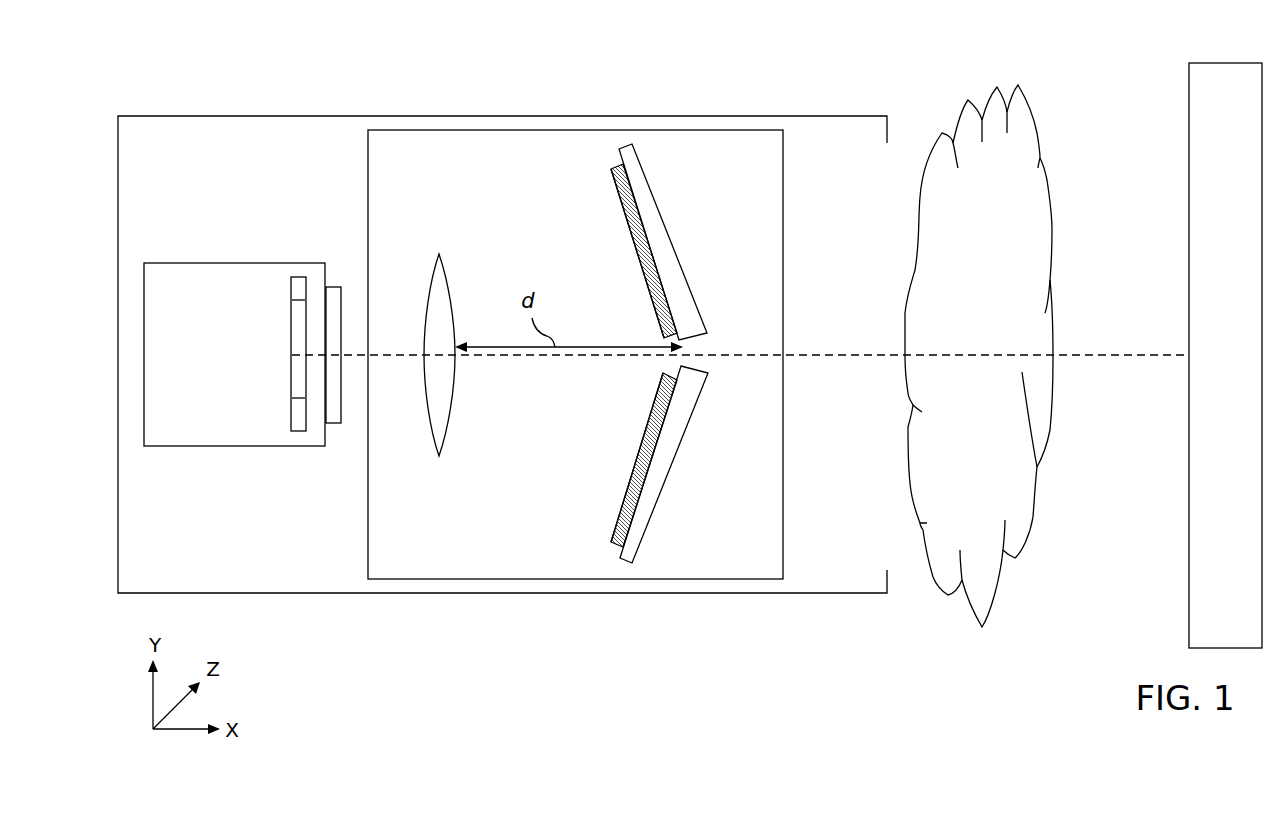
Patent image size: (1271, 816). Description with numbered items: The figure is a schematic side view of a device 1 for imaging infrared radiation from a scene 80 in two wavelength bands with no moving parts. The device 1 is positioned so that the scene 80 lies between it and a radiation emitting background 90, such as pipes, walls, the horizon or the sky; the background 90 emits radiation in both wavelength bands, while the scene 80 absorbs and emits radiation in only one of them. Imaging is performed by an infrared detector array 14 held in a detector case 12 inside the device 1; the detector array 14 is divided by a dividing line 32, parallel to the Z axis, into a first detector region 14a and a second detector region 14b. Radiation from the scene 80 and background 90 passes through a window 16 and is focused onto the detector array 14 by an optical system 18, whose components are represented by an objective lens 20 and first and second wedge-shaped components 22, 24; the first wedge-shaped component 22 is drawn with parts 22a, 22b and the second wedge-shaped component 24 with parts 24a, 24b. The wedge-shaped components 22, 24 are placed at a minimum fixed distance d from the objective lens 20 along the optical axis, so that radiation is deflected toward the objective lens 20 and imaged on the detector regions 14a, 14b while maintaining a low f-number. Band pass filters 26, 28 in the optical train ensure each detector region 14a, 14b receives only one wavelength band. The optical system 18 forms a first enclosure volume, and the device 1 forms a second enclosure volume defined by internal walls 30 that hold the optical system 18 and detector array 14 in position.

The device 1 is at (547, 83).
The detector case 12 is at (236, 263).
The infrared detector array 14 is at (297, 432).
The first detector region 14a is at (305, 397).
The second detector region 14b is at (305, 316).
The window 16 is at (333, 287).
The optical system 18 is at (575, 580).
The objective lens 20 is at (440, 458).
The first wedge-shaped component 22 is at (673, 242).
The reflective layer of first mirror 22a is at (660, 280).
The substrate of first mirror 22b is at (672, 242).
The second wedge-shaped component 24 is at (669, 464).
The reflective layer of second mirror 24a is at (633, 519).
The substrate of second mirror 24b is at (675, 468).
The filter 26 is at (641, 254).
The filter 28 is at (638, 455).
The internal walls 30 is at (502, 116).
The dividing line 32 is at (495, 358).
The scene 80 is at (957, 472).
The radiation emitting background 90 is at (1215, 469).